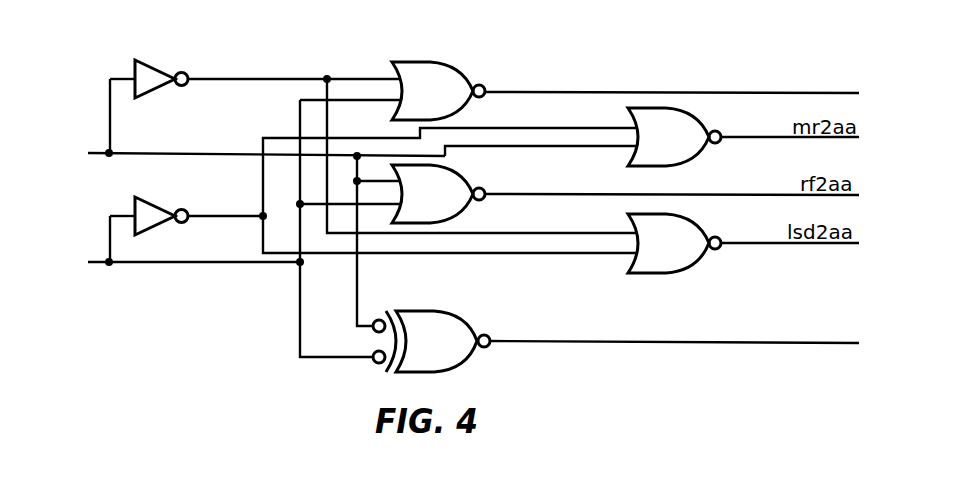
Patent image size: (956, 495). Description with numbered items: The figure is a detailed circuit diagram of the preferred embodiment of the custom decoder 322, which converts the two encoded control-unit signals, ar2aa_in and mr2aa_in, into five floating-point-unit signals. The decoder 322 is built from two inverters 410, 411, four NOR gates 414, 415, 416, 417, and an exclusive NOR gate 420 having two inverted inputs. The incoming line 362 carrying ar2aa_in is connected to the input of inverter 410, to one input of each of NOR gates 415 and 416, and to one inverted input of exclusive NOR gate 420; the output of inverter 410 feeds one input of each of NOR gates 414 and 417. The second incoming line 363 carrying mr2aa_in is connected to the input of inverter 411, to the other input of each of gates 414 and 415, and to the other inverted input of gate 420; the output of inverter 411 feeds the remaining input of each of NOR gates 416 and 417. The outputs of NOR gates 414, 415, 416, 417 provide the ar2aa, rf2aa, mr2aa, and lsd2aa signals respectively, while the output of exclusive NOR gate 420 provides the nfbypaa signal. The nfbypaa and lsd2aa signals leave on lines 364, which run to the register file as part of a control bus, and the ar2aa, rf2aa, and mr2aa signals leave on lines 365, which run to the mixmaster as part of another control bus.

The decoder 322 is at (192, 326).
The line 362 is at (97, 150).
The line 363 is at (97, 260).
The lines 364 is at (815, 349).
The lines 365 is at (825, 64).
The inverter 410 is at (152, 72).
The inverter 411 is at (152, 211).
The NOR gate 414 is at (447, 78).
The NOR gate 415 is at (448, 188).
The NOR gate 416 is at (687, 146).
The NOR gate 417 is at (678, 254).
The exclusive NOR gate 420 is at (448, 336).